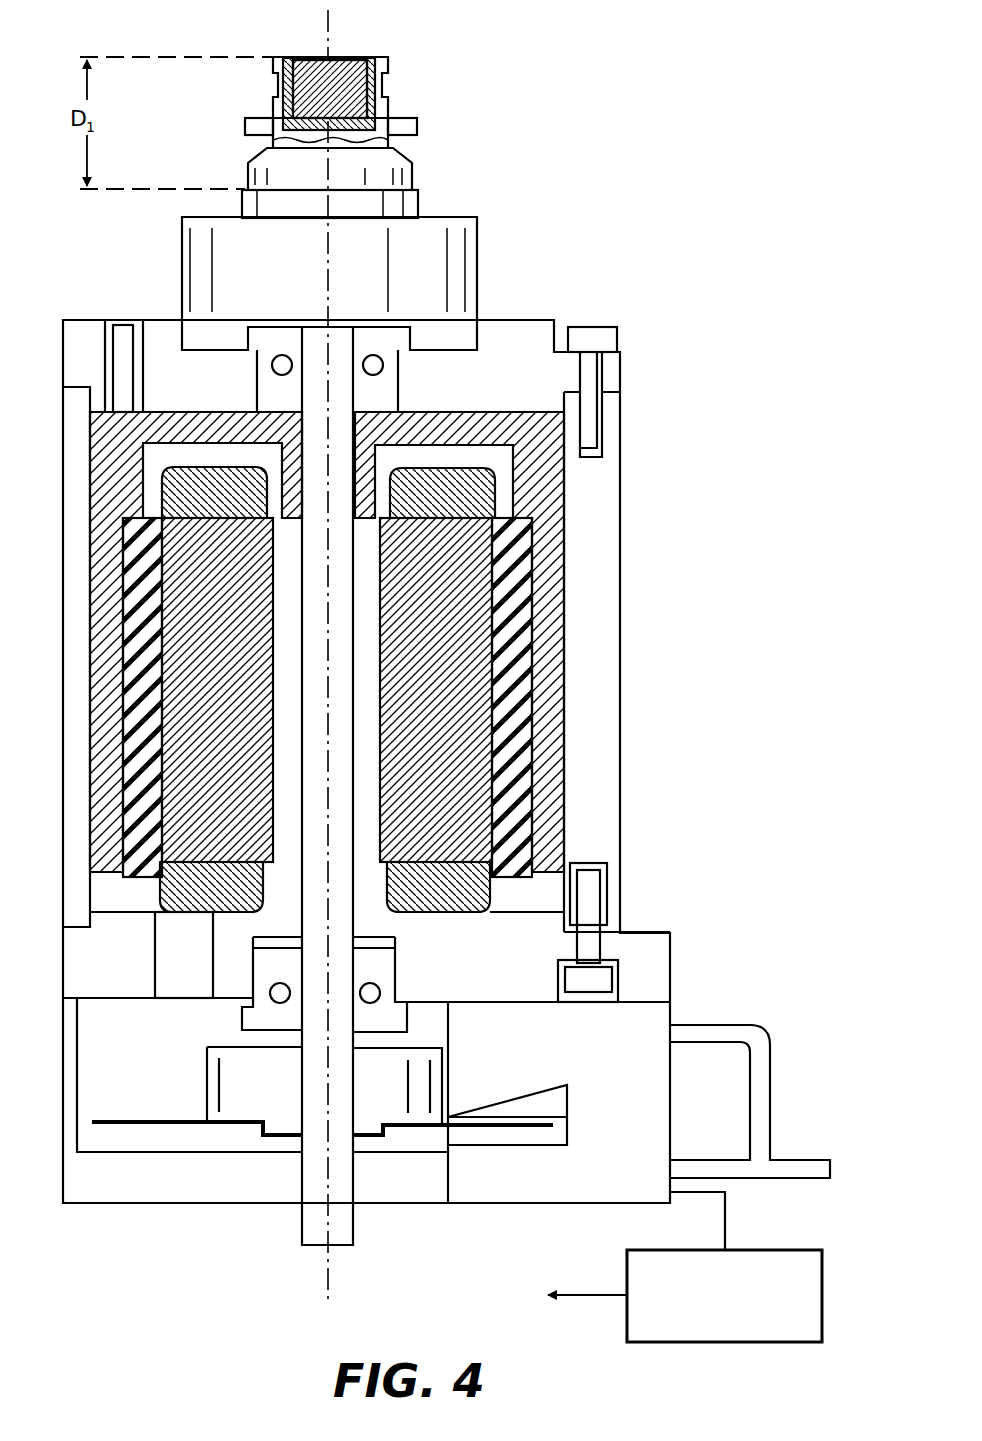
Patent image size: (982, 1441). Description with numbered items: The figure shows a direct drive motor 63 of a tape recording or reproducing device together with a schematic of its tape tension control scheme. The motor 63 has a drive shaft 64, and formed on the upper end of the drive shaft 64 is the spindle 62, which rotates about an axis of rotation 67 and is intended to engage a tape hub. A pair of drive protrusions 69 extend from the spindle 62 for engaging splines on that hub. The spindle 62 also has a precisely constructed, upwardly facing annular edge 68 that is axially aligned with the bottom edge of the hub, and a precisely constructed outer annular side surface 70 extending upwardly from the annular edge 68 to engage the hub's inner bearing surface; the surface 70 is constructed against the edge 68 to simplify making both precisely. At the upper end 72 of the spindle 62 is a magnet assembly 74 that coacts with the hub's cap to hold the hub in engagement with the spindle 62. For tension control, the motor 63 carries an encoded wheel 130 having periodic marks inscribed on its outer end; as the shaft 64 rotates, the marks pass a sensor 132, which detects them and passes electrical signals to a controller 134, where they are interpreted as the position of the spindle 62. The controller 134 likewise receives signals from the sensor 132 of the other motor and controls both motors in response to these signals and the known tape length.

The spindle 62 is at (477, 275).
The direct drive motor 63 is at (614, 598).
The drive shaft 64 is at (305, 1228).
The axis of rotation 67 is at (330, 30).
The annular edge 68 is at (243, 190).
The drive protrusions 69 is at (260, 125).
The outer annular side surface 70 is at (412, 178).
The upper end of the spindle 72 is at (392, 110).
The magnet assembly 74 is at (352, 42).
The encoded wheel 130 is at (502, 1128).
The sensor 132 is at (550, 1106).
The controller 134 is at (725, 1342).